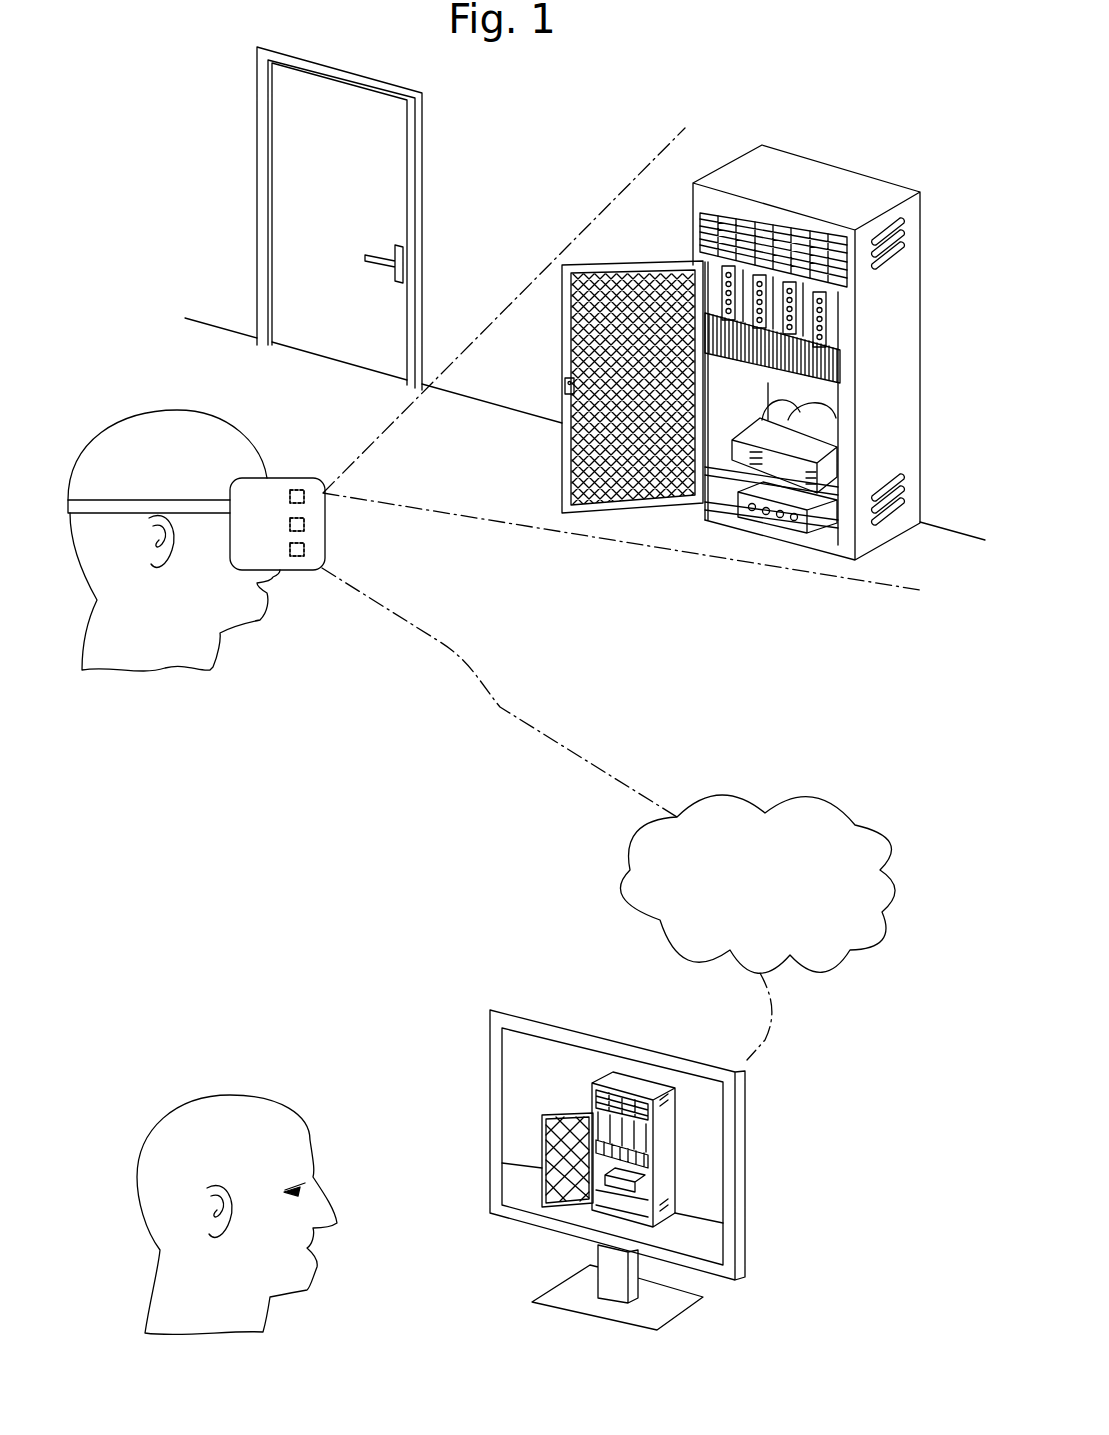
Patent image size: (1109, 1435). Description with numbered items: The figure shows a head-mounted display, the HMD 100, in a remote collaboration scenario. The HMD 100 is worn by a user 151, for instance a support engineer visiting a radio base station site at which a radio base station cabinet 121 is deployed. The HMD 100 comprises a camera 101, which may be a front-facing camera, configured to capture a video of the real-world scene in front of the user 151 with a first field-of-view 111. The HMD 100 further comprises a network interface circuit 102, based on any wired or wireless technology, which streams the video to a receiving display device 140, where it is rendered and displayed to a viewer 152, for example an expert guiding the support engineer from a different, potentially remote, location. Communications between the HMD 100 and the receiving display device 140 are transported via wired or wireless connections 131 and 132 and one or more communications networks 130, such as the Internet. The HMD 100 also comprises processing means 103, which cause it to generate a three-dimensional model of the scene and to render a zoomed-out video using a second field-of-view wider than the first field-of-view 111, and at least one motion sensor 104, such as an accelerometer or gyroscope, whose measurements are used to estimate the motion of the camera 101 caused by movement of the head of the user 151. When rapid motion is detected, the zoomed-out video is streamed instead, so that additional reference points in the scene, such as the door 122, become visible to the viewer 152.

The HMD 100 is at (282, 478).
The camera 101 is at (317, 490).
The network interface circuit 102 is at (305, 502).
The processing means 103 is at (305, 531).
The motion sensor 104 is at (295, 560).
The first field-of-view 111 is at (592, 221).
The radio base station cabinet 121 is at (933, 263).
The door 122 is at (300, 180).
The communications network 130 is at (820, 797).
The connection 131 is at (582, 762).
The connection 132 is at (768, 1030).
The receiving display device 140 is at (490, 1050).
The user 151 is at (114, 413).
The viewer 152 is at (157, 1112).